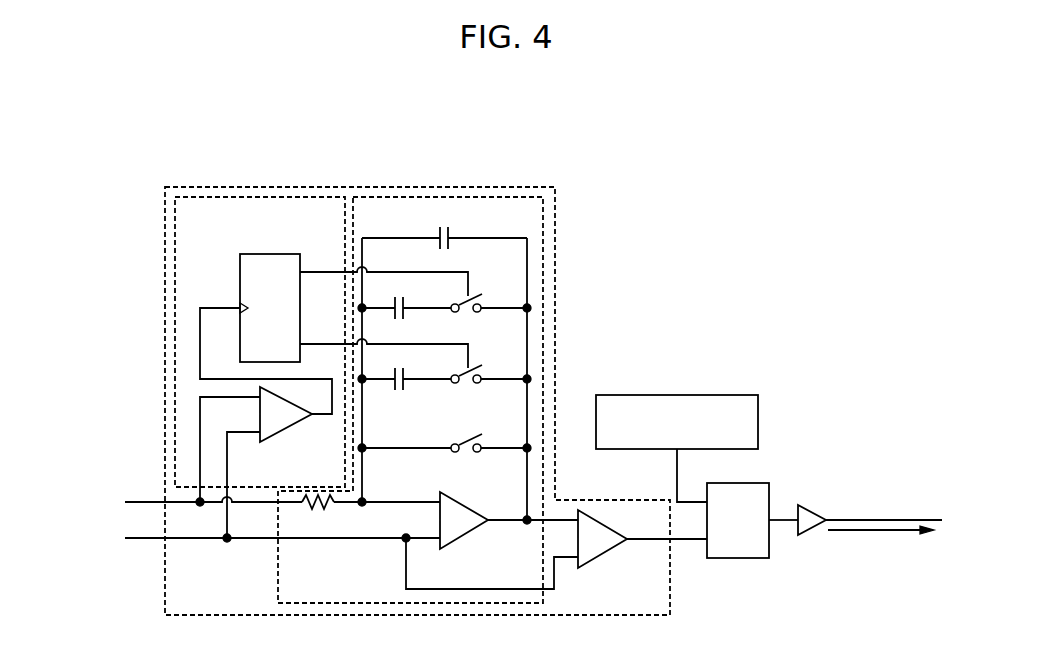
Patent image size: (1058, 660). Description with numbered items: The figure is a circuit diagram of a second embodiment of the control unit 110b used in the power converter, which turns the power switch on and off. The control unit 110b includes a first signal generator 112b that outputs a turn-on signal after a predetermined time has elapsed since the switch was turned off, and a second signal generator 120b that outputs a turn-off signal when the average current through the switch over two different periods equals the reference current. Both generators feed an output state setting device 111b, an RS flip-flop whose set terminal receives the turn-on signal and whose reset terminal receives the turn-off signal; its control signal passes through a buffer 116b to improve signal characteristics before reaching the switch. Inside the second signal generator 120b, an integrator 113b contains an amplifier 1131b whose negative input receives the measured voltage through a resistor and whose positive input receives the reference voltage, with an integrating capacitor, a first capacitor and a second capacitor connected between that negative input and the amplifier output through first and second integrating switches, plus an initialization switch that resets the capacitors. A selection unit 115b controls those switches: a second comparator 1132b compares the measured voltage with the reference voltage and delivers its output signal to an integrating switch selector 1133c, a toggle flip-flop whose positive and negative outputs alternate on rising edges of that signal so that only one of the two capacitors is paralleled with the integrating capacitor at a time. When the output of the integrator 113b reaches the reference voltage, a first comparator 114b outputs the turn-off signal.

The control unit 110b is at (138, 111).
The second signal generator 120b is at (364, 187).
The selection unit 115b is at (175, 321).
The integrator 113b is at (543, 318).
The integrating switch selector 1133c is at (268, 254).
The second comparator 1132b is at (283, 432).
The amplifier 1131b is at (474, 545).
The first comparator 114b is at (612, 558).
The first signal generator 112b is at (678, 395).
The output state setting device 111b is at (737, 558).
The buffer 116b is at (835, 485).